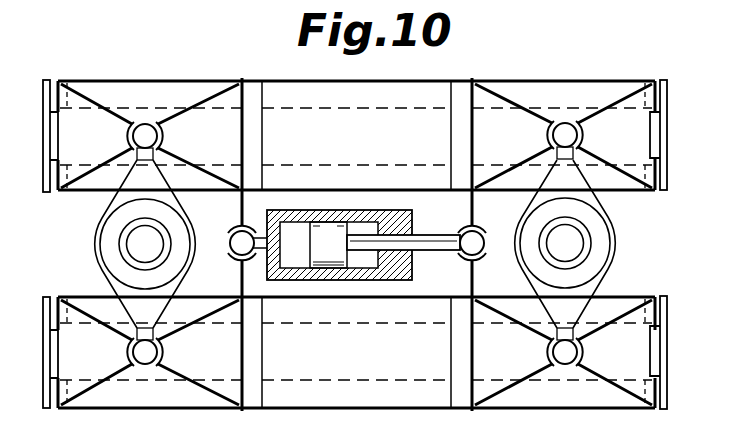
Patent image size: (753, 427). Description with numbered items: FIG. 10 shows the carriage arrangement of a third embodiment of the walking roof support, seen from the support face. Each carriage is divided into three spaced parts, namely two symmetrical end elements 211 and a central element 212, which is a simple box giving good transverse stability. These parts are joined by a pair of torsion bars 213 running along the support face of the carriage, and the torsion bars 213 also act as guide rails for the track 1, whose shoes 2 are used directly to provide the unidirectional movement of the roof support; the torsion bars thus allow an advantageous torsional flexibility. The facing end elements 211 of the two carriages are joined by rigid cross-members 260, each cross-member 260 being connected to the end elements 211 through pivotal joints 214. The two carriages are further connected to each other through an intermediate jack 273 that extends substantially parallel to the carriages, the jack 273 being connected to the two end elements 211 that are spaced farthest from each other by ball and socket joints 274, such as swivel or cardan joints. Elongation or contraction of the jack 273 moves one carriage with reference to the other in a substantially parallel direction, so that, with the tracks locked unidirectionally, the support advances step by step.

The track 1 is at (663, 152).
The shoe 2 is at (662, 122).
The end element 211 is at (163, 93).
The central element 212 is at (397, 92).
The torsion bar 213 is at (254, 80).
The pivotal joint 214 is at (563, 132).
The cross-member 260 is at (593, 200).
The jack 273 is at (405, 270).
The ball and socket joint 274 is at (236, 251).